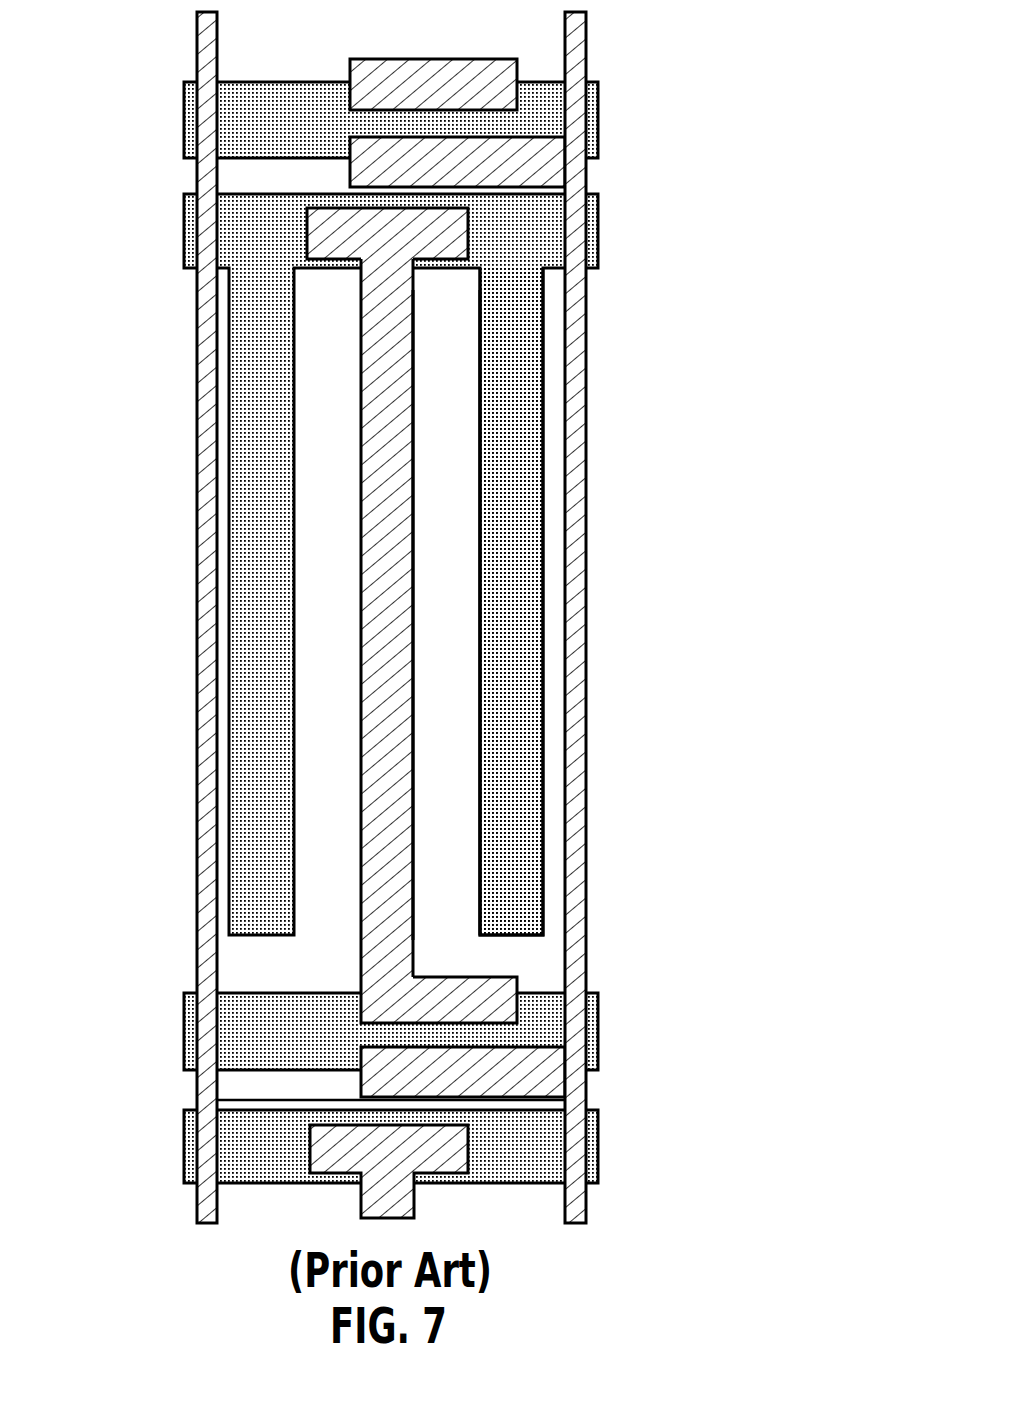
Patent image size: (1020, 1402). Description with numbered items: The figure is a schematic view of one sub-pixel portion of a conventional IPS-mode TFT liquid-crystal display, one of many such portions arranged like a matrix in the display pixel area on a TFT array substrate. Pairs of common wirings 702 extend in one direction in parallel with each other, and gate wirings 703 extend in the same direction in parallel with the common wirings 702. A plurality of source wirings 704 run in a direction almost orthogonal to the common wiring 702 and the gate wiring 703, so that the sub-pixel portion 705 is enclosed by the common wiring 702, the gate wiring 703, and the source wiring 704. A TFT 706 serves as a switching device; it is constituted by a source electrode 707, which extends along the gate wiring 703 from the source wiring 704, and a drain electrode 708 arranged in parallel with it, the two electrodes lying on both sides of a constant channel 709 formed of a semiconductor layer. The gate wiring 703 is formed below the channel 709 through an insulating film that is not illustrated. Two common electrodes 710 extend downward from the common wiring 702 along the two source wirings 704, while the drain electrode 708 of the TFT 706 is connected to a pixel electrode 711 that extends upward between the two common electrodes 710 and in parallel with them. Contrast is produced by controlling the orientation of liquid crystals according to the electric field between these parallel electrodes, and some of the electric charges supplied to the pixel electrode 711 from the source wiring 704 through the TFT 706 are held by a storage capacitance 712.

The common wiring 702 is at (598, 210).
The gate wiring 703 is at (547, 108).
The source wiring 704 is at (586, 617).
The sub-pixel portion 705 is at (440, 715).
The TFT 706 is at (523, 1037).
The source electrode 707 is at (360, 1083).
The drain electrode 708 is at (518, 982).
The channel 709 is at (360, 1038).
The common electrode 710 is at (540, 474).
The pixel electrode 711 is at (413, 820).
The storage capacitance 712 is at (450, 262).